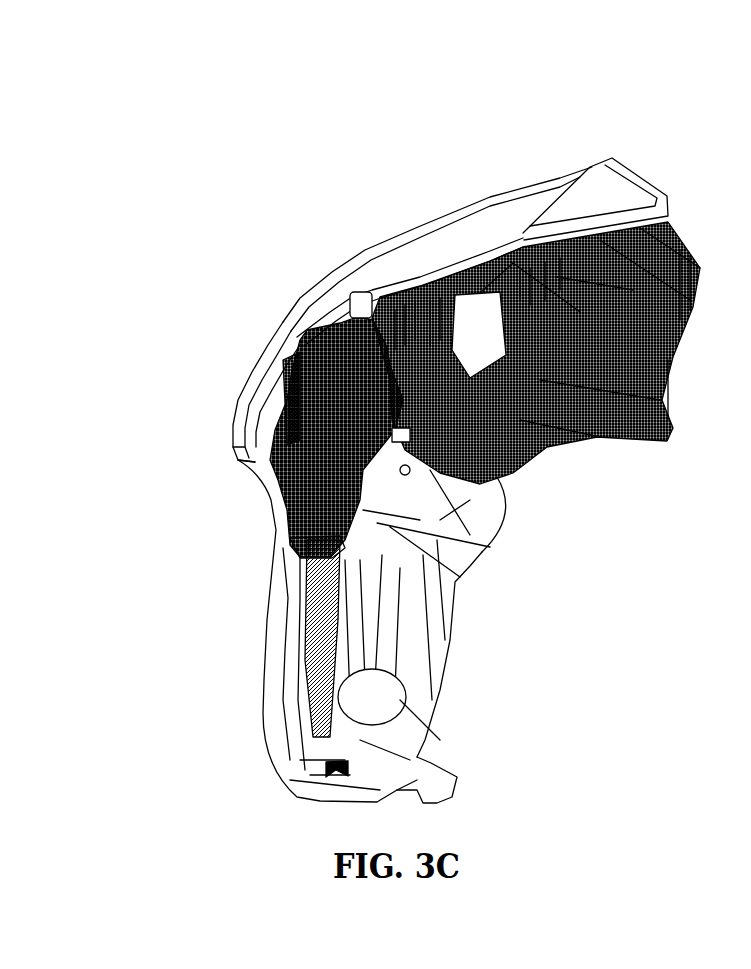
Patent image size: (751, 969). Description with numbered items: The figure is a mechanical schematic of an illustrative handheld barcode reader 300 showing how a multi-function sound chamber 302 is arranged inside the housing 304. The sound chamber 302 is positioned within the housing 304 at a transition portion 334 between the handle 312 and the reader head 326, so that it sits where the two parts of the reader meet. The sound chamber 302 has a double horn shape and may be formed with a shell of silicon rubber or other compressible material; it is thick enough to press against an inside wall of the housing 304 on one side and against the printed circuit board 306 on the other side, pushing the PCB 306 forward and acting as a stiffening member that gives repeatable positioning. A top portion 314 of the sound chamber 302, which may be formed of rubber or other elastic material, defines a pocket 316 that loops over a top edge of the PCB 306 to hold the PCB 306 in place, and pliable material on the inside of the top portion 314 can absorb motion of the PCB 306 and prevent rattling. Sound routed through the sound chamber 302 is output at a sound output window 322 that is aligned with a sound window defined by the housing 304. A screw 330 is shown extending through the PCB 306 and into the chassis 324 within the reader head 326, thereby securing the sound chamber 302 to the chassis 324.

The handheld barcode reader 300 is at (489, 99).
The sound chamber 302 is at (283, 502).
The housing 304 is at (250, 410).
The printed circuit board 306 is at (392, 462).
The handle 312 is at (263, 707).
The top portion 314 is at (323, 352).
The pocket 316 is at (400, 433).
The sound output window 322 is at (285, 548).
The chassis 324 is at (580, 437).
The reader head 326 is at (432, 258).
The screw 330 is at (405, 470).
The transition portion 334 is at (173, 450).